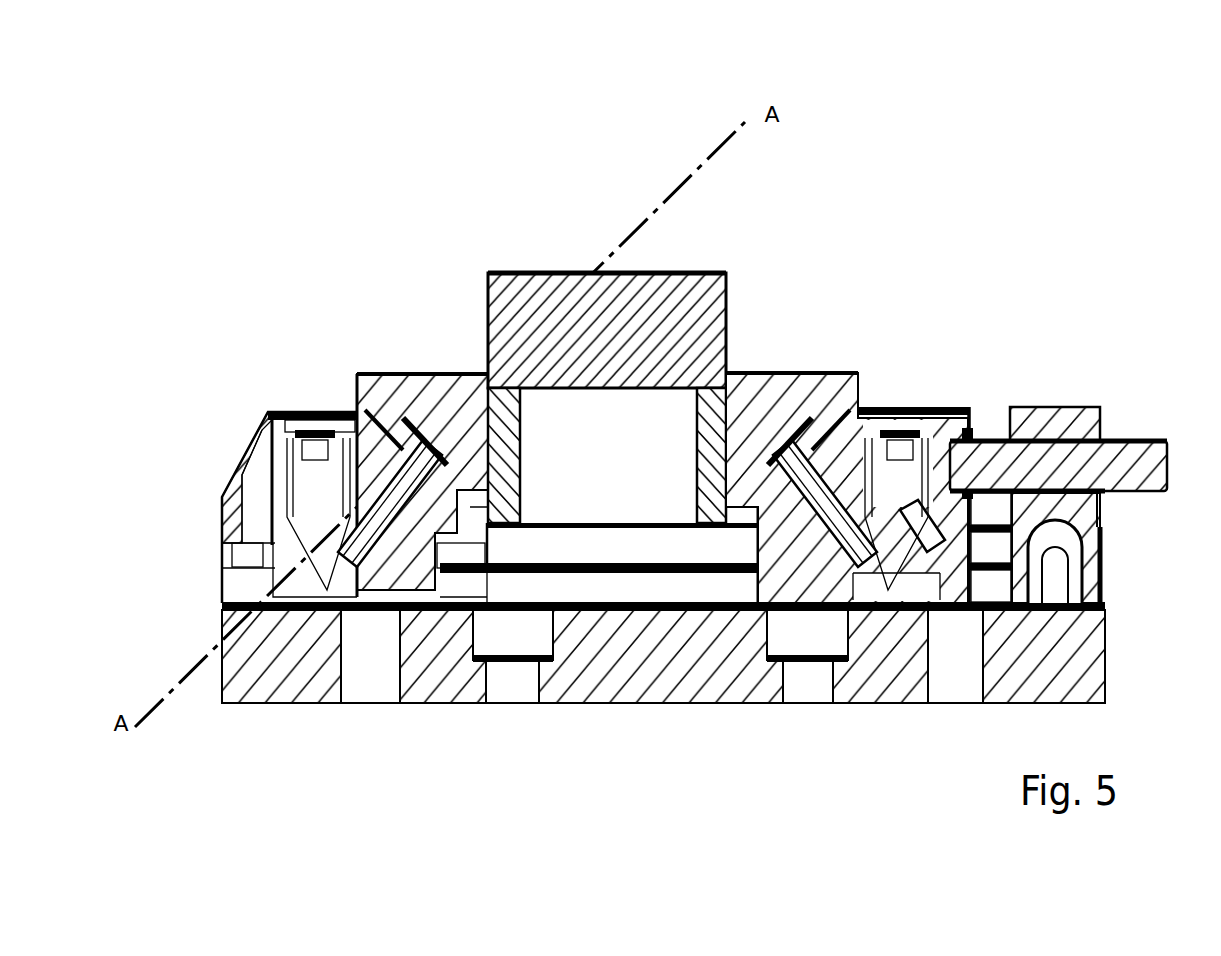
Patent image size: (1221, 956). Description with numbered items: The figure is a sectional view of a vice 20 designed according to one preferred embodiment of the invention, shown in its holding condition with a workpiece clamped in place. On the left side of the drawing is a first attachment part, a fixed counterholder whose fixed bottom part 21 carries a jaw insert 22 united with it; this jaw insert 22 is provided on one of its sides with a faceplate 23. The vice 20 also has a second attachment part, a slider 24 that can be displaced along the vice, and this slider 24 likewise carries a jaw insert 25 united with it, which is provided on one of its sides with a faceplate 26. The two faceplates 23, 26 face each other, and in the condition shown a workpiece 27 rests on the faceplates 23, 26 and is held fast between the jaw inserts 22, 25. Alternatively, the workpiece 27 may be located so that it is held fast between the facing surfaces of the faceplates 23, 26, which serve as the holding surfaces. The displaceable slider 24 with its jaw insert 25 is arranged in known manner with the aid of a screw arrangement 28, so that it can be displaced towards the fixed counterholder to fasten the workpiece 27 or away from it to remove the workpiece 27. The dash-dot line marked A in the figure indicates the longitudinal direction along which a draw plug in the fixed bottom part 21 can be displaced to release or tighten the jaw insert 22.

The vice 20 is at (319, 163).
The fixed bottom part 21 is at (278, 412).
The jaw insert 22 is at (433, 393).
The faceplate 23 is at (505, 437).
The slider 24 is at (968, 408).
The jaw insert 25 is at (822, 397).
The faceplate 26 is at (765, 374).
The workpiece 27 is at (722, 274).
The screw arrangement 28 is at (1133, 457).